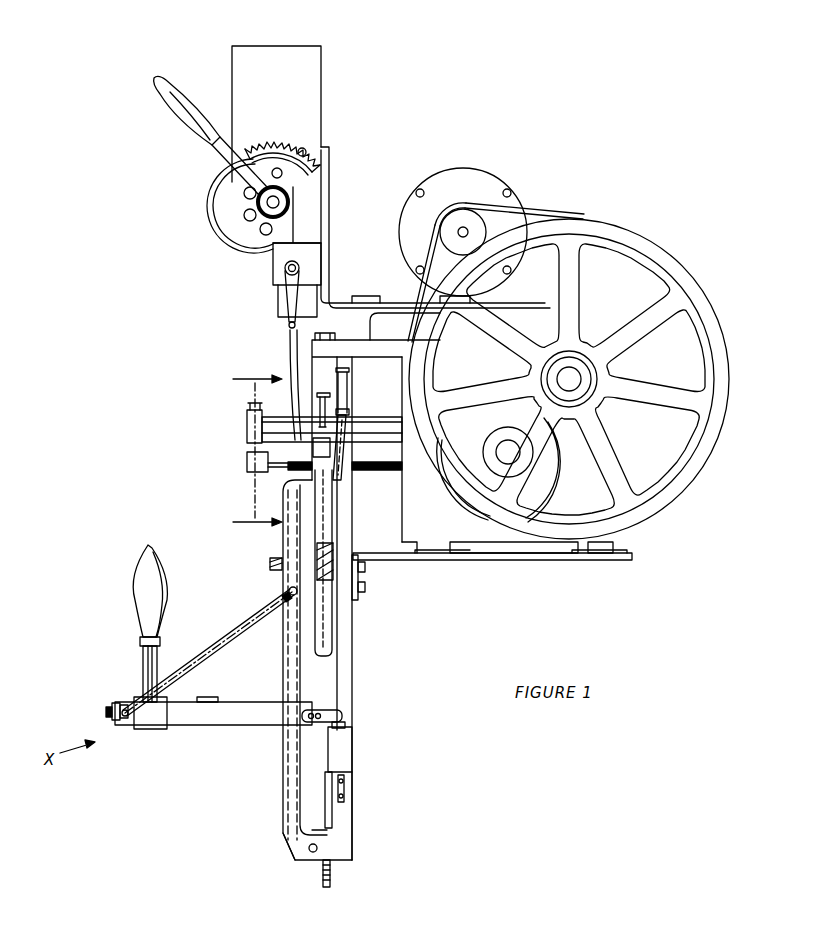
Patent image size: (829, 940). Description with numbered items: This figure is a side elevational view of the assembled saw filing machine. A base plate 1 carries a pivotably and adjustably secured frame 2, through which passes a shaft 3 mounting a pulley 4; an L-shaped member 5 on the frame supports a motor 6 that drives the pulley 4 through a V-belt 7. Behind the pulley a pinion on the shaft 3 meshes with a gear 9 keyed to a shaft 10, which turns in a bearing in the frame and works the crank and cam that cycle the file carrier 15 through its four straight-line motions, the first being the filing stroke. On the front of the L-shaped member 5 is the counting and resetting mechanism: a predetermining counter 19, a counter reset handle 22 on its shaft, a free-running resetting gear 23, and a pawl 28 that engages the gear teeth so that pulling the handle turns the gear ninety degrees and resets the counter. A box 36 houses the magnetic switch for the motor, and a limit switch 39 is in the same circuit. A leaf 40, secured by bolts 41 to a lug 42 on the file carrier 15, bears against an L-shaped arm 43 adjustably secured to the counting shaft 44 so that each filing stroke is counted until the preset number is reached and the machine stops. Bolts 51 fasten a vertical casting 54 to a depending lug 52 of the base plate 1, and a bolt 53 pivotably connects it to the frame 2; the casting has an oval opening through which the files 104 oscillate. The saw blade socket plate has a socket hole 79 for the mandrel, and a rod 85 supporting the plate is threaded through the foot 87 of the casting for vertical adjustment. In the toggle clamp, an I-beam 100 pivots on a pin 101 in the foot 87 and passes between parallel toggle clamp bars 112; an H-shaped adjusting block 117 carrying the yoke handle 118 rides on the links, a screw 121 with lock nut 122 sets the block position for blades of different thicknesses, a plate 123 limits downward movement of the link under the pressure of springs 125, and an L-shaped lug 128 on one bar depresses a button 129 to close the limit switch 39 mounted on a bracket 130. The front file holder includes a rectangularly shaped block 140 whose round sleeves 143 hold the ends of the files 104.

The base plate 1 is at (573, 560).
The frame 2 is at (617, 548).
The shaft 3 is at (577, 381).
The pulley 4 is at (712, 408).
The L-shaped member 5 is at (330, 161).
The motor 6 is at (497, 187).
The V-belt 7 is at (528, 214).
The gear 9 is at (458, 498).
The shaft 10 is at (507, 457).
The file carrier 15 is at (386, 420).
The predetermining counter 19 is at (273, 258).
The counter reset handle 22 is at (160, 97).
The resetting gear 23 is at (228, 210).
The pawl 28 is at (293, 150).
The box 36 is at (297, 57).
The limit switch 39 is at (352, 758).
The leaf 40 is at (288, 340).
The bolts 41 is at (298, 430).
The lug 42 is at (307, 431).
The L-shaped arm 43 is at (288, 307).
The counting shaft 44 is at (286, 271).
The bolts 51 is at (366, 589).
The depending lug 52 is at (357, 601).
The bolt 53 is at (329, 333).
The vertical casting 54 is at (345, 650).
The mandrel or socket hole 79 is at (338, 556).
The rod 85 is at (332, 881).
The foot 87 is at (350, 832).
The I-beam 100 is at (283, 787).
The pin 101 is at (311, 853).
The files 104 is at (375, 472).
The toggle clamp bars 112 is at (236, 726).
The H-shaped adjusting block 117 is at (152, 730).
The yoke handle 118 is at (142, 568).
The screw 121 is at (108, 714).
The lock nut 122 is at (120, 704).
The plate 123 is at (212, 700).
The springs 125 is at (232, 632).
The L-shaped lug 128 is at (345, 715).
The button 129 is at (350, 724).
The bracket 130 is at (345, 790).
The rectangularly shaped block 140 is at (245, 462).
The round sleeves 143 is at (286, 471).